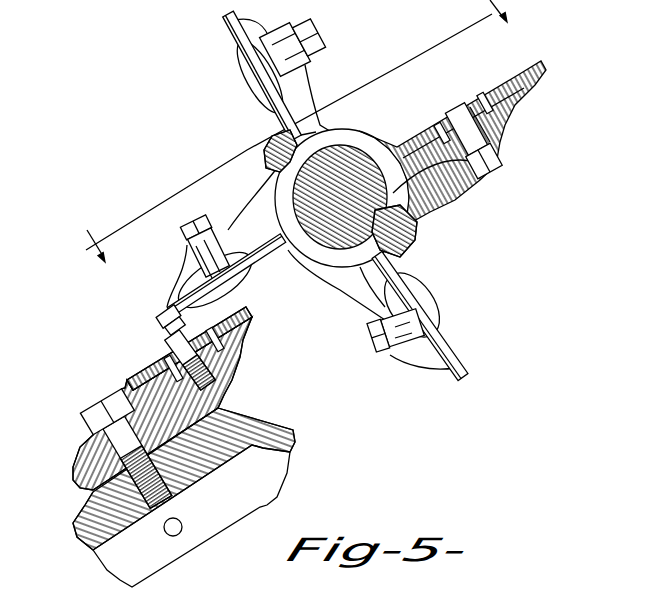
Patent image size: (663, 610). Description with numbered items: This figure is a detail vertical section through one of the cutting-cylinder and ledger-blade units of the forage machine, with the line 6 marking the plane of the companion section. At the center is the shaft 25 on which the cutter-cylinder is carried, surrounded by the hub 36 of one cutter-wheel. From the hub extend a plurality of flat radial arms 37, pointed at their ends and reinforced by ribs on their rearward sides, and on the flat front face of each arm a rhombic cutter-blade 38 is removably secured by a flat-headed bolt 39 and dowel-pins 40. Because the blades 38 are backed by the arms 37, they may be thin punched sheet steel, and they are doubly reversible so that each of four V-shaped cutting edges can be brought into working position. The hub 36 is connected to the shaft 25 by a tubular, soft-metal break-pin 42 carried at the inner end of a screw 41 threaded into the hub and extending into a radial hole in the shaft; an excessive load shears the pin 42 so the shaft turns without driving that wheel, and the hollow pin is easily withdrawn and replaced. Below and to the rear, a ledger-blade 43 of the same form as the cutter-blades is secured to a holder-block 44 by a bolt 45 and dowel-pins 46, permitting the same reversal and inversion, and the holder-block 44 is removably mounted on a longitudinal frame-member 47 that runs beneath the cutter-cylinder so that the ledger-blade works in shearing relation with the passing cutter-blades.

The section line 6— 6 is at (289, 131).
The shaft 25 is at (327, 215).
The hub 36 is at (340, 253).
The flat radial arms 37 is at (297, 113).
The cutter-blades 38 is at (229, 26).
The flat-headed bolts 39 is at (252, 80).
The dowel-pins 40 is at (435, 128).
The screw 41 is at (264, 160).
The break-pins 42 is at (440, 198).
The ledger-blades 43 is at (250, 315).
The holder-block 44 is at (223, 392).
The bolt 45 is at (160, 330).
The dowel-pins 46 is at (163, 367).
The longitudinal frame-member 47 is at (202, 463).